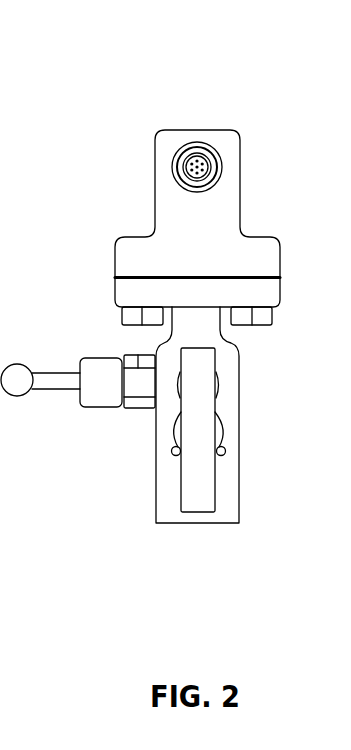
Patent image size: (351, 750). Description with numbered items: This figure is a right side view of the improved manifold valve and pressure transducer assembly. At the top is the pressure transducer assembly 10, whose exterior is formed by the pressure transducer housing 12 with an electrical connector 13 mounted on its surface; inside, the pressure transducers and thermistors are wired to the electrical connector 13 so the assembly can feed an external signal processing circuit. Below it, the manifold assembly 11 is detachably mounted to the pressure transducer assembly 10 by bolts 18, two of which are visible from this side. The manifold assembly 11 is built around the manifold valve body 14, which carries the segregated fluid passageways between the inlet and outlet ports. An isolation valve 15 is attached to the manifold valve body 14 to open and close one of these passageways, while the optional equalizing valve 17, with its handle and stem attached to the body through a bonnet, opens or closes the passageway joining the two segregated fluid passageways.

The pressure transducer assembly 10 is at (195, 97).
The manifold assembly 11 is at (203, 549).
The pressure transducer housing 12 is at (180, 128).
The electrical connector 13 is at (173, 165).
The manifold valve body 14 is at (157, 483).
The isolation valve 15 is at (197, 512).
The equalizing valve 17 is at (17, 397).
The bolts 18 is at (140, 328).